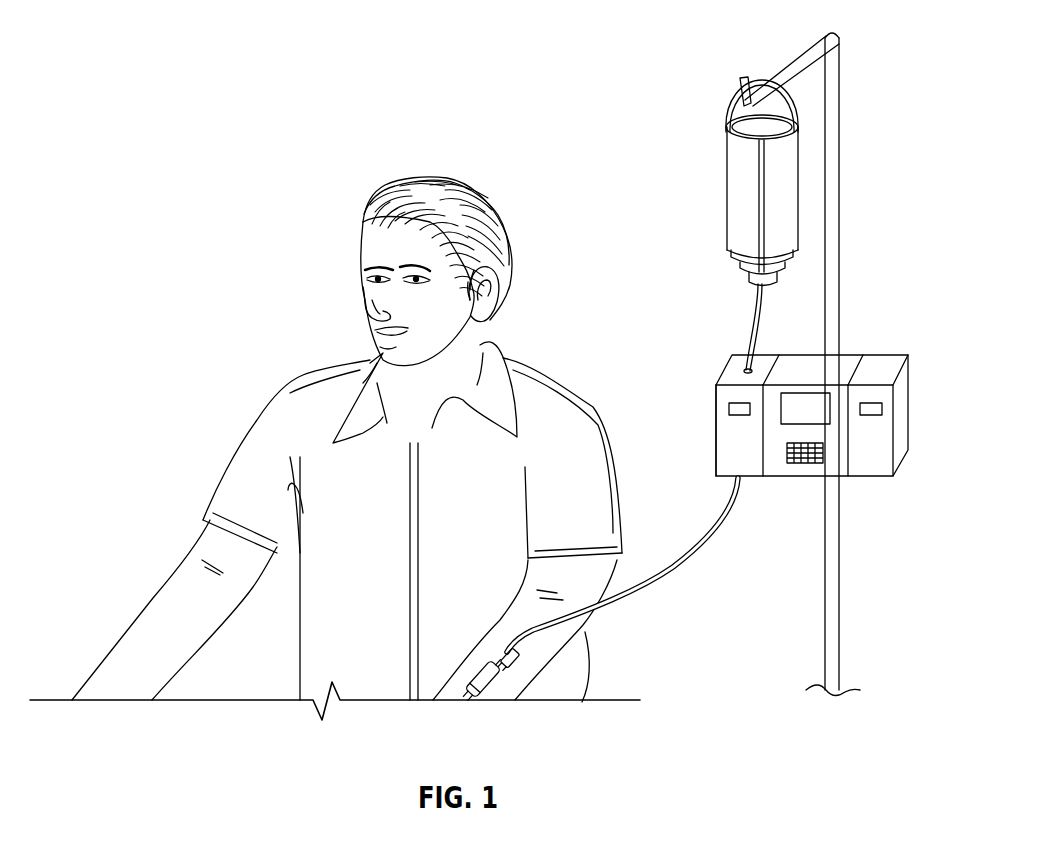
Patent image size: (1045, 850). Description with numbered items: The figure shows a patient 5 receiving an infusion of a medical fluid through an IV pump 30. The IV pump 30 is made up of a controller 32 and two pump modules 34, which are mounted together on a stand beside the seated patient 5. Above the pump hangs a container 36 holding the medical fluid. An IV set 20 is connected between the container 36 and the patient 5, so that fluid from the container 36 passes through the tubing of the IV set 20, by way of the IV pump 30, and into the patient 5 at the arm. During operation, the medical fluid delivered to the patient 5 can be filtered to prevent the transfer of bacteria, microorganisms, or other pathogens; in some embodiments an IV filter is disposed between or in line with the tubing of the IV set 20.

The patient 5 is at (233, 226).
The IV set 20 is at (676, 572).
The IV pump 30 is at (878, 307).
The controller 32 is at (820, 368).
The pump module 34 is at (725, 438).
The container 36 is at (746, 182).